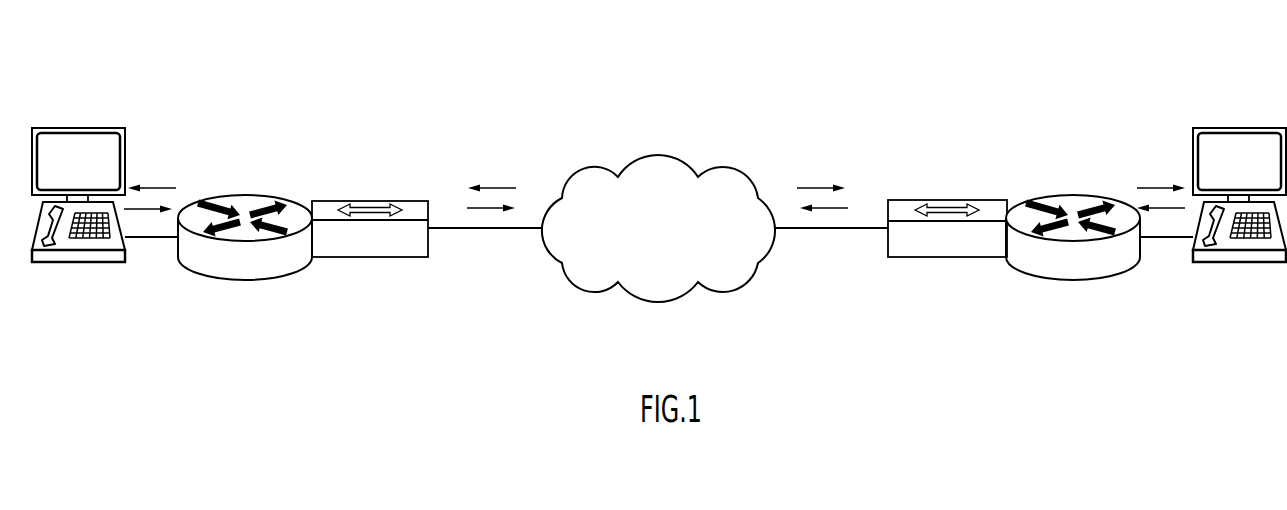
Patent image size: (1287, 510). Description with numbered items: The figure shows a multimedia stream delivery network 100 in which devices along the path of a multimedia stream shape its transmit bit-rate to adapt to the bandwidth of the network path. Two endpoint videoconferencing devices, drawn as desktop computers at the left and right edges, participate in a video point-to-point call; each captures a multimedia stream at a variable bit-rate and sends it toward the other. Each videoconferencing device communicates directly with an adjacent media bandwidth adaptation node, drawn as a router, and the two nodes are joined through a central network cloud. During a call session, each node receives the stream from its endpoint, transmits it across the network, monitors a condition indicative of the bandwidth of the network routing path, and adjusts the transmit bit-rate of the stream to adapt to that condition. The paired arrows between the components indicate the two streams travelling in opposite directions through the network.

The multimedia stream delivery network 100 is at (490, 44).